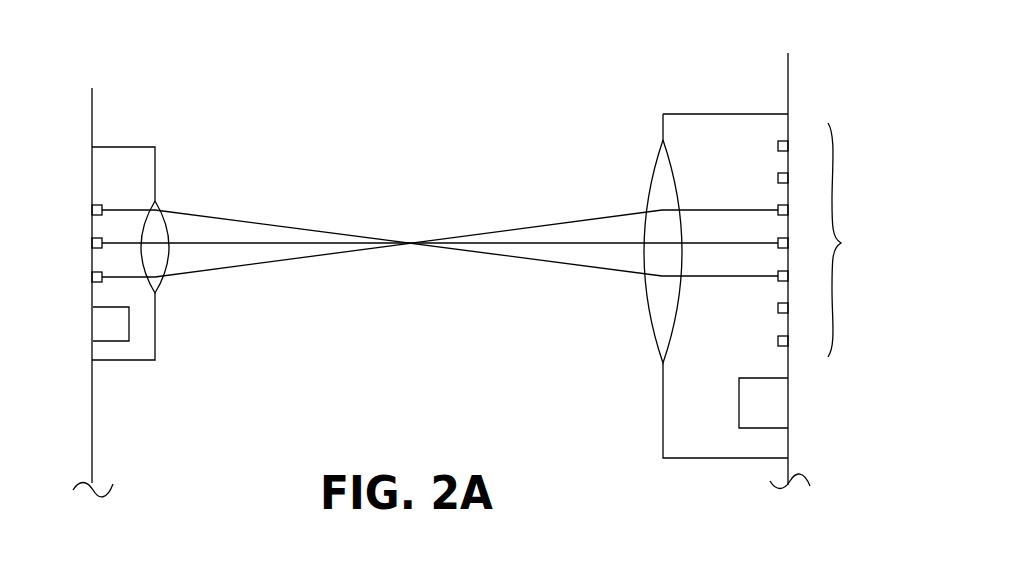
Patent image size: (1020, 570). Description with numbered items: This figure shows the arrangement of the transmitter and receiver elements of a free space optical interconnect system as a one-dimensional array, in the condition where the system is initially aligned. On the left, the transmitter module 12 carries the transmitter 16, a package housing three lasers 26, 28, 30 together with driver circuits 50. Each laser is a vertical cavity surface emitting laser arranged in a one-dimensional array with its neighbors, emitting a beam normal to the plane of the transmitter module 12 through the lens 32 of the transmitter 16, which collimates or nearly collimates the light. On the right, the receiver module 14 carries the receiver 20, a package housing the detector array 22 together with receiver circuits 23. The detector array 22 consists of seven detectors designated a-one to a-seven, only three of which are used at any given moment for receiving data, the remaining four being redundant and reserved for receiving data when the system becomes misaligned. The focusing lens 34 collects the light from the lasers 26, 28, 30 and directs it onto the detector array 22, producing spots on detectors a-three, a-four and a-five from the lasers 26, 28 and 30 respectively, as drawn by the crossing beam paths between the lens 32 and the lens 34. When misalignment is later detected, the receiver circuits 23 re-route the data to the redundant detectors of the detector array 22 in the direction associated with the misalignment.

The transmitter module 12 is at (92, 107).
The receiver module 14 is at (788, 84).
The transmitter 16 is at (133, 147).
The receiver 20 is at (716, 114).
The detector array 22 is at (828, 240).
The receiver circuits 23 is at (782, 397).
The laser 26 is at (92, 210).
The laser 28 is at (92, 243).
The laser 30 is at (92, 277).
The lens 32 is at (155, 225).
The focusing lens 34 is at (661, 200).
The driver circuits 50 is at (106, 323).